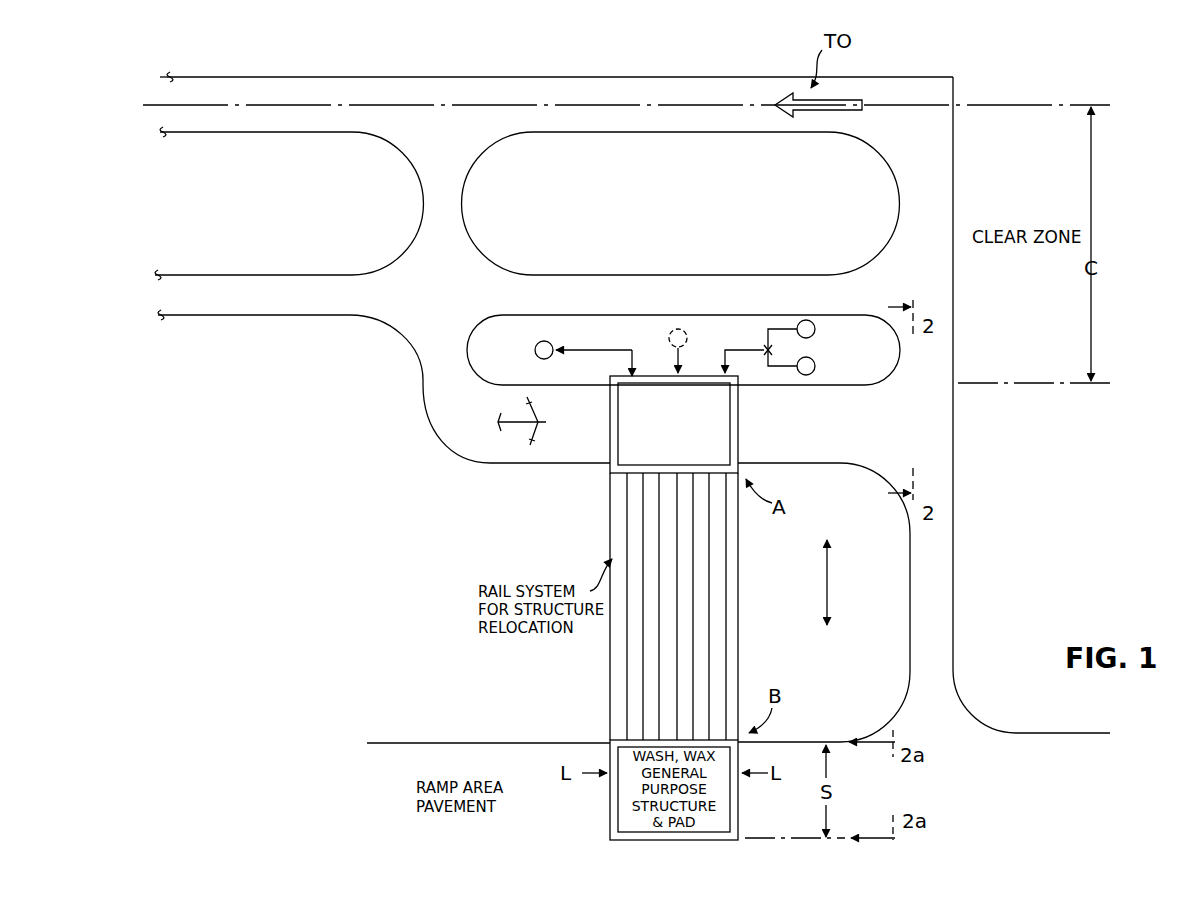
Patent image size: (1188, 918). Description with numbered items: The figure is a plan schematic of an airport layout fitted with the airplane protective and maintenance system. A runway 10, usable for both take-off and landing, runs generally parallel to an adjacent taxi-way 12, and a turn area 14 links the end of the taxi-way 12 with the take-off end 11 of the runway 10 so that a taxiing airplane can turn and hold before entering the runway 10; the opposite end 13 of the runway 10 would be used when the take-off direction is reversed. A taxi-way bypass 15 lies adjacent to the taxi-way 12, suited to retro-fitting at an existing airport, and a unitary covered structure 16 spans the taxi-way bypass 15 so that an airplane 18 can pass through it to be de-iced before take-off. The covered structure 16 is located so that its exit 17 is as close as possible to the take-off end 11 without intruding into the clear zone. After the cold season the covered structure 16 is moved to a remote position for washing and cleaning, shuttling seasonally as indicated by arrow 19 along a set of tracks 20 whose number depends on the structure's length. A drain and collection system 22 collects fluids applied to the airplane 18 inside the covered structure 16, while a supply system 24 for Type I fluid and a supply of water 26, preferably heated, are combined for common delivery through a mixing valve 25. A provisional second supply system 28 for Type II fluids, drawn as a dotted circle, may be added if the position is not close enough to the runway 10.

The runway 10 is at (651, 100).
The take-off end 11 is at (939, 72).
The taxi-way 12 is at (687, 310).
The corresponding end 13 is at (150, 86).
The turn area 14 is at (912, 182).
The taxi-way bypass 15 is at (437, 358).
The covered structure 16 is at (603, 434).
The exit 17 is at (744, 438).
The airplane 18 is at (518, 430).
The arrow 19 is at (829, 585).
The set of tracks 20 is at (660, 610).
The drain and collection system 22 is at (531, 350).
The supply system 24 is at (816, 329).
The mixing valve 25 is at (781, 350).
The supply of water 26 is at (816, 366).
The second supply system 28 is at (689, 341).